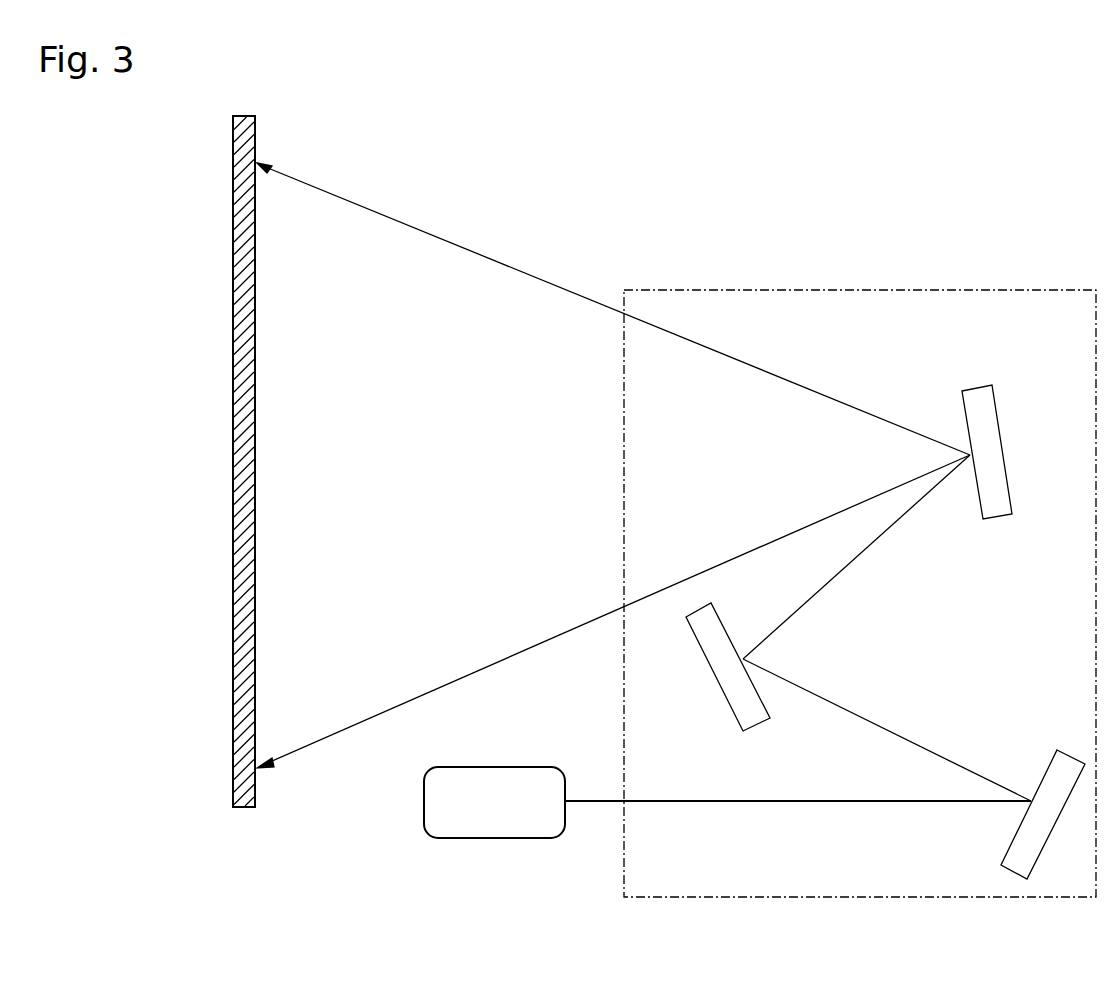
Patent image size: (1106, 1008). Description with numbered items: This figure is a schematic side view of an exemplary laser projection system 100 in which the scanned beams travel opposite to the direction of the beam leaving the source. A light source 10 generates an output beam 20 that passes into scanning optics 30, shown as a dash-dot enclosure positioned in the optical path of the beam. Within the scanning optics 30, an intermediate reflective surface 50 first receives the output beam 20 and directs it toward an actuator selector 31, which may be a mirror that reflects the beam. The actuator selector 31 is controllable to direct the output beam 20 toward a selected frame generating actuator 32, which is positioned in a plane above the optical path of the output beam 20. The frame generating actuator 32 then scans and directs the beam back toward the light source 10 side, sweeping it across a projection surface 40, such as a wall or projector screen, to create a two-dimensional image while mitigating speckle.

The light source 10 is at (522, 767).
The output beam 20 is at (610, 800).
The scanning optics 30 is at (1086, 290).
The actuator selector 31 is at (741, 727).
The frame generating actuator 32 is at (972, 388).
The projection surface 40 is at (233, 795).
The intermediate reflective surface 50 is at (1004, 852).
The laser projection system 100 is at (500, 382).